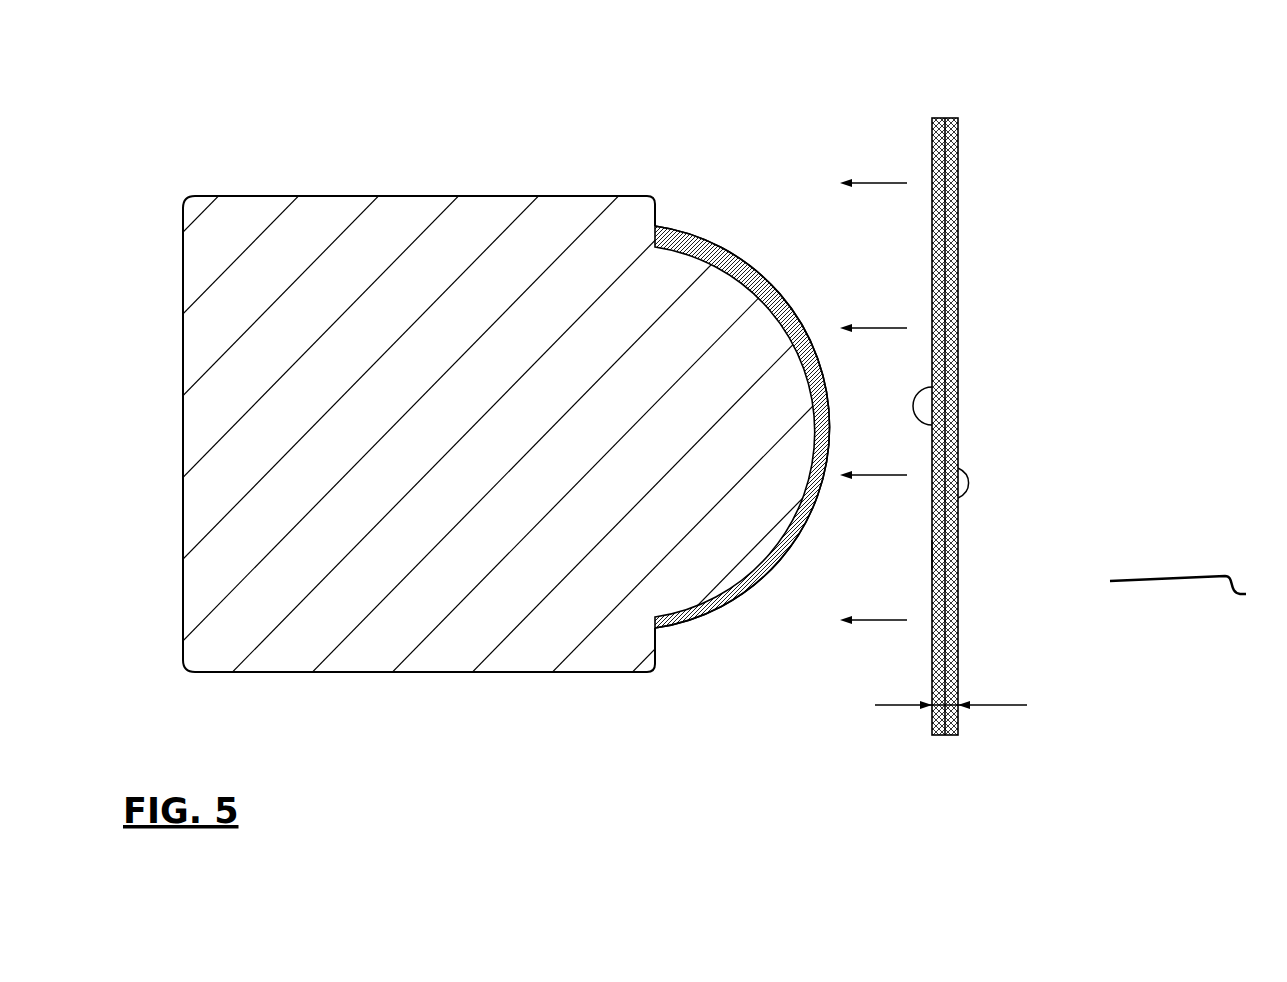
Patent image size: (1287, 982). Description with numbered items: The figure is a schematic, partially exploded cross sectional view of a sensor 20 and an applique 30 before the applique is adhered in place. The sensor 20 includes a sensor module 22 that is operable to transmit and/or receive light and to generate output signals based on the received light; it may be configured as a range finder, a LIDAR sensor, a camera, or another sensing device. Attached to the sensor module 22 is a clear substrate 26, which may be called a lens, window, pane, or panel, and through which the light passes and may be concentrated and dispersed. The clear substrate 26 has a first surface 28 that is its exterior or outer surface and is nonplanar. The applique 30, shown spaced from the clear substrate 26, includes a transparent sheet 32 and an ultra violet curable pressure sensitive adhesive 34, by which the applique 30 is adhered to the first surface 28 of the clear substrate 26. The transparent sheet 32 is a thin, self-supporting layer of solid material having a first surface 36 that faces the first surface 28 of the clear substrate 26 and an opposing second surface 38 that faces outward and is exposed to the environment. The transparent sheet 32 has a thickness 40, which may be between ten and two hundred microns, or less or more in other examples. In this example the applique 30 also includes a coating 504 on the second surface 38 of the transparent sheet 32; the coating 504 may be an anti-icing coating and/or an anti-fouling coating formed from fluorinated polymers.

The sensor 20 is at (536, 143).
The sensor module 22 is at (388, 182).
The clear substrate 26 is at (740, 273).
The first surface 28 is at (812, 328).
The applique 30 is at (982, 120).
The transparent sheet 32 is at (950, 277).
The pressure sensitive adhesive 34 is at (937, 555).
The first surface 36 is at (930, 425).
The second surface 38 is at (975, 498).
The thickness 40 is at (1000, 702).
The coating 504 is at (1198, 594).